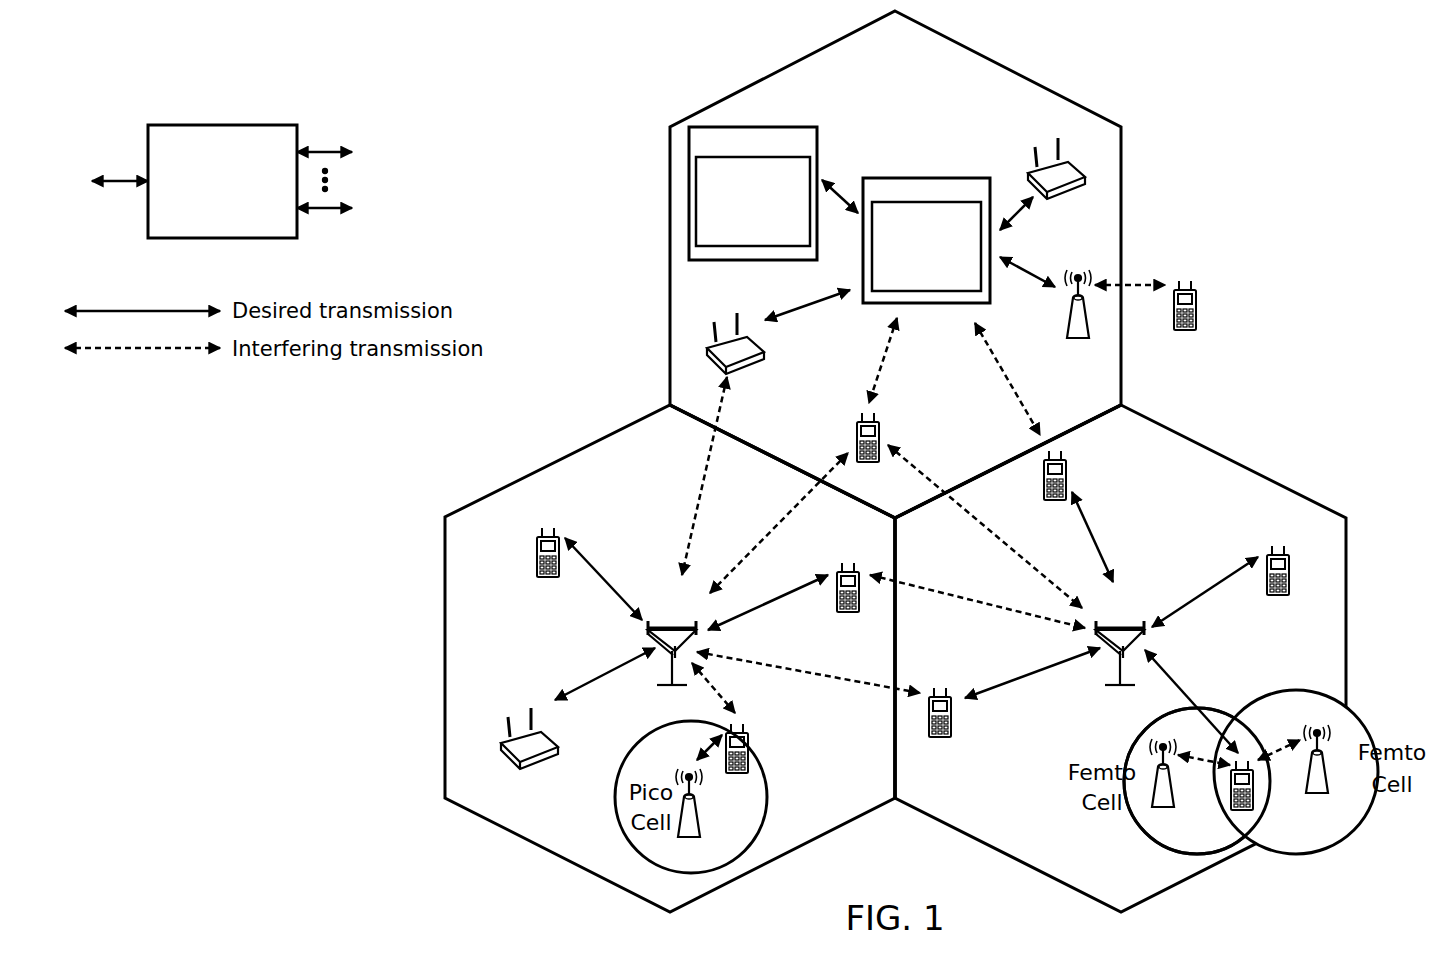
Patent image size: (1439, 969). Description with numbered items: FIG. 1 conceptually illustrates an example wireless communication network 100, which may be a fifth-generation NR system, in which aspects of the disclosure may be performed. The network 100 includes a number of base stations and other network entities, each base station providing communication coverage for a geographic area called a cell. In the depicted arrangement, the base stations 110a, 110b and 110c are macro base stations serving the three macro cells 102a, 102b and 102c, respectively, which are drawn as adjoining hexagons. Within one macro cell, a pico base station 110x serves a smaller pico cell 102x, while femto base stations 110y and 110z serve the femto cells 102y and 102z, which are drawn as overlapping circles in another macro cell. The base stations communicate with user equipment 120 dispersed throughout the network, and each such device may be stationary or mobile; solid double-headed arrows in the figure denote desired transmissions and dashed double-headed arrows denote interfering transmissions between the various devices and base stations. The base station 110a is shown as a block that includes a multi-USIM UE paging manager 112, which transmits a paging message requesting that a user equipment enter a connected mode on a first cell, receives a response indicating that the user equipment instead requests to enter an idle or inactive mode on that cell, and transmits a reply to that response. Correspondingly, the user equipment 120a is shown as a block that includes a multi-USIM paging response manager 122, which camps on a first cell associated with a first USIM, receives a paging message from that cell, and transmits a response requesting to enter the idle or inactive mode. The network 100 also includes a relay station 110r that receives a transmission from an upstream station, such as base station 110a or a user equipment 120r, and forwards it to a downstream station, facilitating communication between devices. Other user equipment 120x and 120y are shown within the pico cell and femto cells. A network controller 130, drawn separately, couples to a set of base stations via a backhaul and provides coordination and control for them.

The wireless communication network 100 is at (1274, 82).
The macro cell 102a is at (1008, 70).
The macro cell 102b is at (560, 464).
The macro cell 102c is at (1240, 466).
The pico cell 102x is at (640, 744).
The femto cell 102y is at (1130, 746).
The femto cell 102z is at (1294, 690).
The base station 110a is at (938, 240).
The base station 110b is at (668, 626).
The base station 110c is at (1120, 626).
The relay station 110r is at (1070, 323).
The pico base station 110x is at (700, 828).
The femto base station 110y is at (1174, 800).
The femto base station 110z is at (1328, 787).
The multi-USIM UE paging manager 112 is at (935, 292).
The user equipment 120 is at (1064, 157).
The user equipment 120a is at (753, 196).
The user equipment 120r is at (1196, 320).
The user equipment 120x is at (748, 743).
The user equipment 120y is at (1231, 802).
The multi-USIM paging response manager 122 is at (783, 247).
The network controller 130 is at (218, 124).